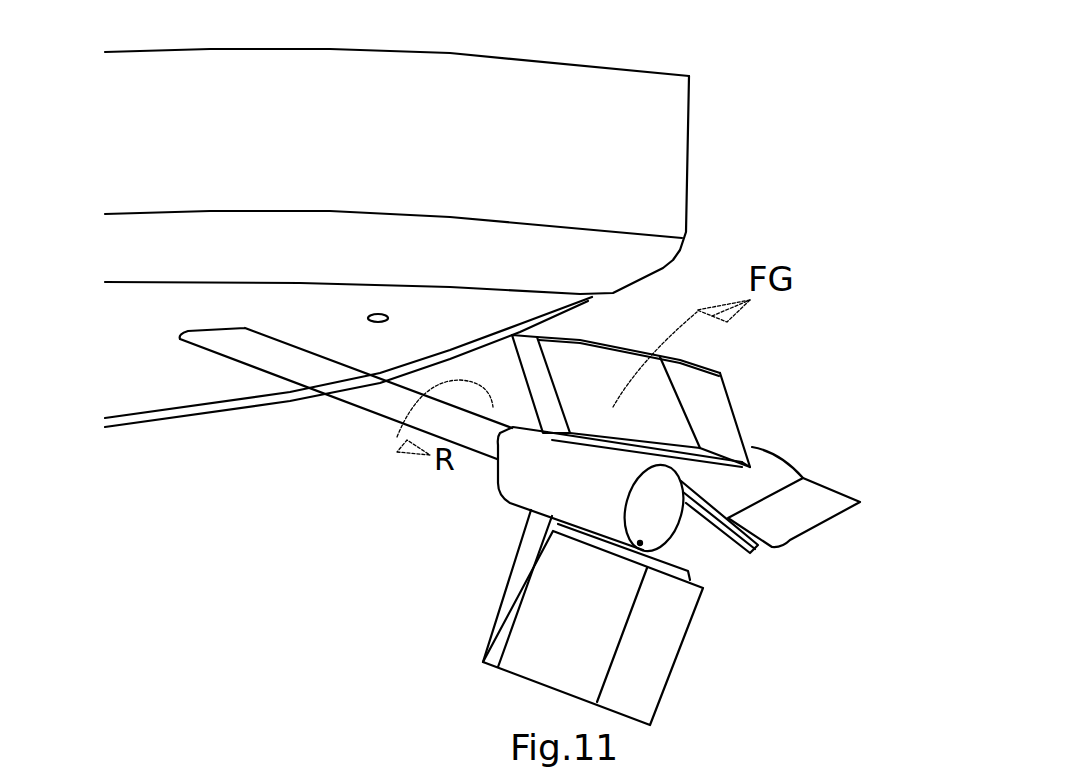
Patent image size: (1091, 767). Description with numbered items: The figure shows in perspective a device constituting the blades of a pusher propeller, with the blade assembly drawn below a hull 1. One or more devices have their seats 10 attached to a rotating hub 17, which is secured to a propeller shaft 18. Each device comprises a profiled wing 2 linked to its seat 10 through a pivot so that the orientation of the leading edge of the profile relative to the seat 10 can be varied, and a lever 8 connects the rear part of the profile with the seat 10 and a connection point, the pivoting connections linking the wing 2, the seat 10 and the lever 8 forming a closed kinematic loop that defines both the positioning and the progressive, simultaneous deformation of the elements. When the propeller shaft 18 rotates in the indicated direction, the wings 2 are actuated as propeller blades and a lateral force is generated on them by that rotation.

The hull 1 is at (439, 238).
The profiled wing 2 is at (642, 520).
The lever 8 is at (692, 420).
The seat 10 is at (504, 569).
The rotating hub 17 is at (415, 491).
The propeller shaft 18 is at (346, 456).